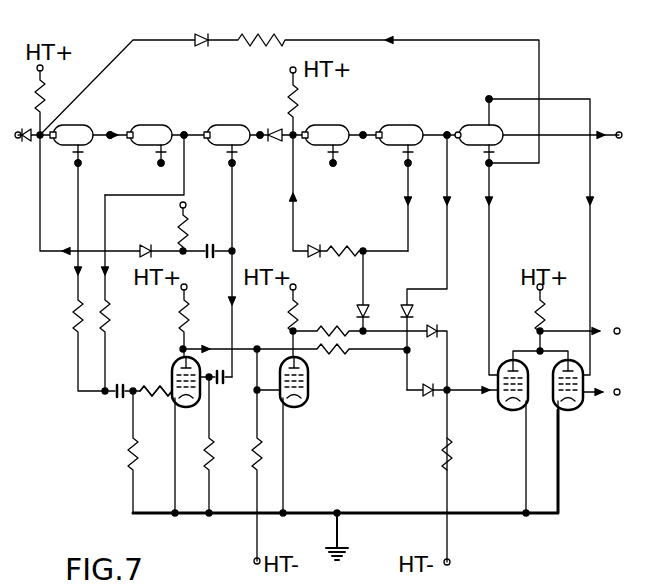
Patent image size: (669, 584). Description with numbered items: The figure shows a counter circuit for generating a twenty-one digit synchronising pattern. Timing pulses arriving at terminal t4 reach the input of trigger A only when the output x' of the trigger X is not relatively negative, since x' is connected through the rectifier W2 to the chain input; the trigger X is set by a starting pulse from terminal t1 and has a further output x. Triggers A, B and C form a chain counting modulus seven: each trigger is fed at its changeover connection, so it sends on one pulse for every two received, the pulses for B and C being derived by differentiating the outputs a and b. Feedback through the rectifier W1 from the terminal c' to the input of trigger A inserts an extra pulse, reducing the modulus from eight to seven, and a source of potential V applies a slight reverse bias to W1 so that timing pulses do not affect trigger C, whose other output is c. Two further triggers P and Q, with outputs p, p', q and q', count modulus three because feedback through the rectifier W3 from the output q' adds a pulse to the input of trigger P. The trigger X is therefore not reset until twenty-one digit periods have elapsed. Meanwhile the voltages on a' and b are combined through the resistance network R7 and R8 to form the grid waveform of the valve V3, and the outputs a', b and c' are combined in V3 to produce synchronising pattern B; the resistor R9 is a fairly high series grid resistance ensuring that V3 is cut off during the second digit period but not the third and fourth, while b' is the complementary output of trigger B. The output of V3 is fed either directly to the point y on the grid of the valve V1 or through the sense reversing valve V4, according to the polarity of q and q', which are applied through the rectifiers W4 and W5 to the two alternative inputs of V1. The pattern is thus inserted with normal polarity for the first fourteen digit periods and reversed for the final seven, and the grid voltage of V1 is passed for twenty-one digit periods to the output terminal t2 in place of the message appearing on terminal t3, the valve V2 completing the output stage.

The trigger A is at (58, 132).
The trigger B is at (137, 132).
The trigger C is at (213, 132).
The trigger P is at (309, 132).
The trigger Q is at (385, 132).
The trigger X is at (461, 132).
The rectifier W1 is at (140, 250).
The rectifier W2 is at (207, 26).
The rectifier W3 is at (318, 239).
The rectifier W4 is at (418, 306).
The rectifier W5 is at (345, 291).
The source of potential V is at (190, 223).
The valve V1 is at (498, 398).
The valve V2 is at (578, 400).
The valve V3 is at (173, 363).
The sense reversing valve V4 is at (308, 383).
The resistance R7 is at (70, 277).
The resistance R8 is at (121, 294).
The resistor R9 is at (149, 379).
The terminal t1 is at (609, 125).
The output terminal t2 is at (606, 319).
The terminal t3 is at (601, 382).
The terminal t4 is at (23, 126).
The output connection a is at (112, 124).
The output connection b is at (186, 124).
The output connection c is at (260, 124).
The output p is at (364, 123).
The output q is at (447, 123).
The output x is at (482, 97).
The point y is at (452, 380).
The output connection a' is at (66, 166).
The output connection b' is at (150, 166).
The terminal c' is at (223, 166).
The output p' is at (323, 165).
The output q' is at (398, 165).
The output x' is at (479, 167).